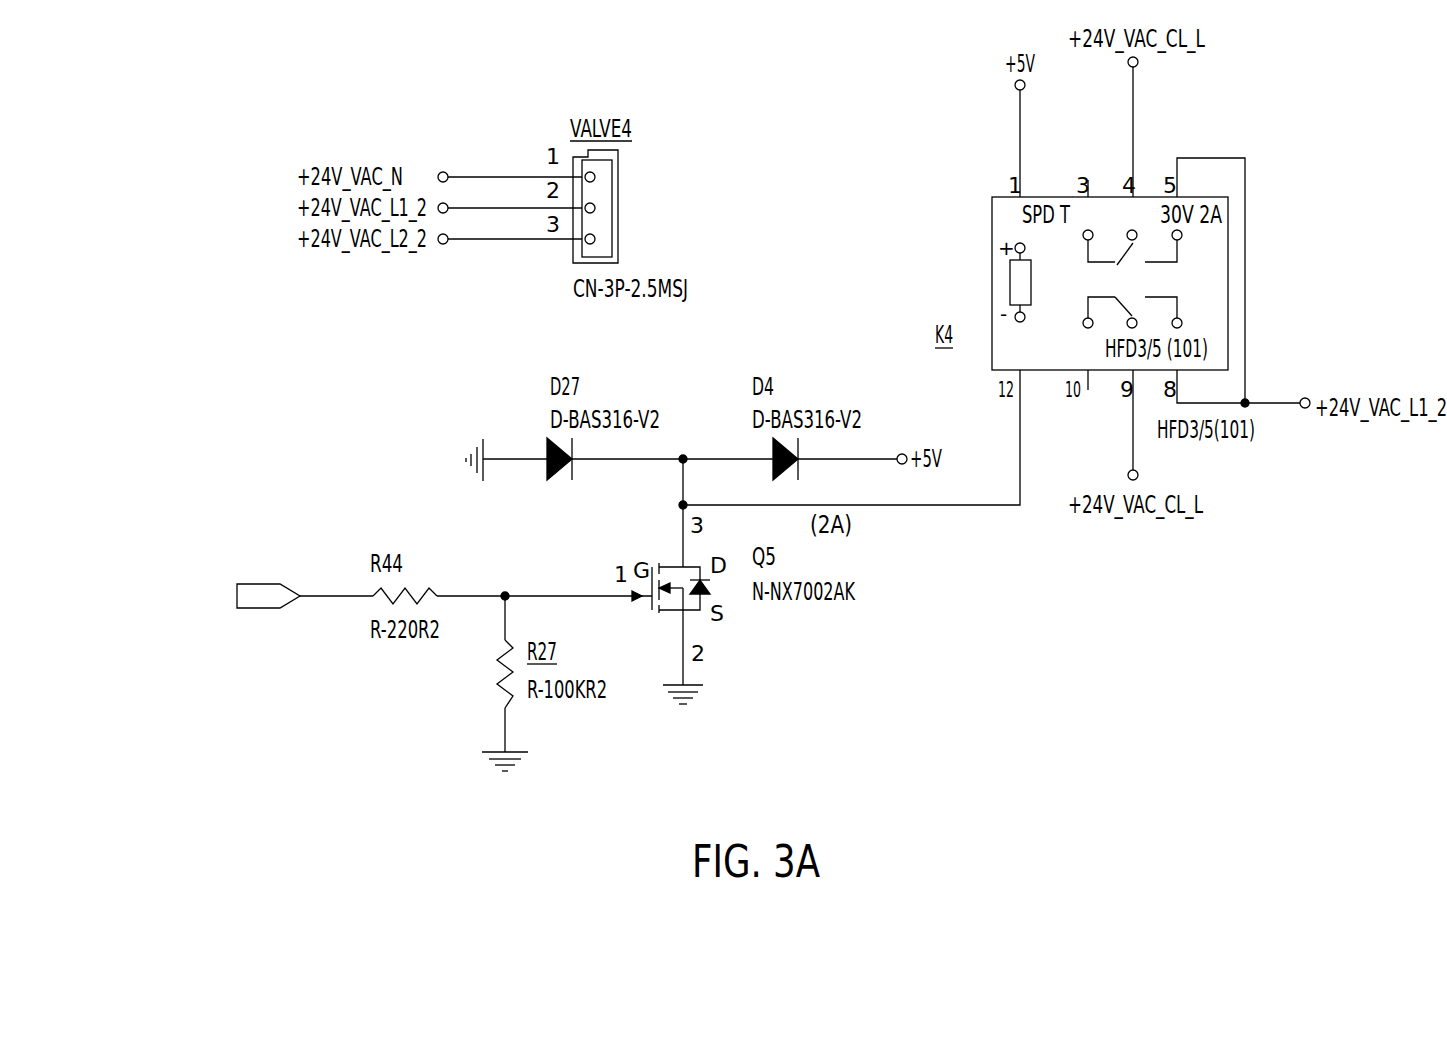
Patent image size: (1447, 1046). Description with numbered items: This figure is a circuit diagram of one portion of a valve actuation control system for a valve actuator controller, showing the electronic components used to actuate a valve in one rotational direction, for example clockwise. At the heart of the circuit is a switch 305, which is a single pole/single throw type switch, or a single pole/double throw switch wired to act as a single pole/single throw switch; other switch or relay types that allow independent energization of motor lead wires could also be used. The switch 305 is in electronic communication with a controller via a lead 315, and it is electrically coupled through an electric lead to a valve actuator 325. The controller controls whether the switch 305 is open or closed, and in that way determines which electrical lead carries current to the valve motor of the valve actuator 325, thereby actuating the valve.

The switch 305 is at (1130, 232).
The lead 315 is at (1135, 450).
The valve actuator 325 is at (250, 582).